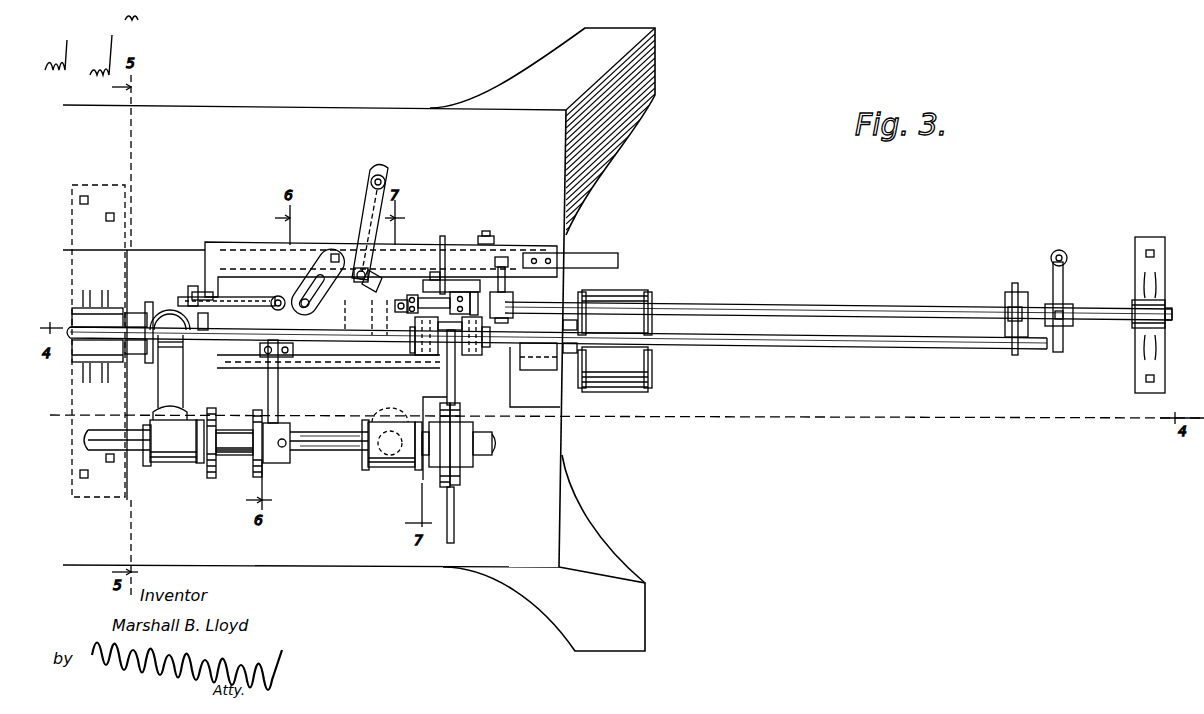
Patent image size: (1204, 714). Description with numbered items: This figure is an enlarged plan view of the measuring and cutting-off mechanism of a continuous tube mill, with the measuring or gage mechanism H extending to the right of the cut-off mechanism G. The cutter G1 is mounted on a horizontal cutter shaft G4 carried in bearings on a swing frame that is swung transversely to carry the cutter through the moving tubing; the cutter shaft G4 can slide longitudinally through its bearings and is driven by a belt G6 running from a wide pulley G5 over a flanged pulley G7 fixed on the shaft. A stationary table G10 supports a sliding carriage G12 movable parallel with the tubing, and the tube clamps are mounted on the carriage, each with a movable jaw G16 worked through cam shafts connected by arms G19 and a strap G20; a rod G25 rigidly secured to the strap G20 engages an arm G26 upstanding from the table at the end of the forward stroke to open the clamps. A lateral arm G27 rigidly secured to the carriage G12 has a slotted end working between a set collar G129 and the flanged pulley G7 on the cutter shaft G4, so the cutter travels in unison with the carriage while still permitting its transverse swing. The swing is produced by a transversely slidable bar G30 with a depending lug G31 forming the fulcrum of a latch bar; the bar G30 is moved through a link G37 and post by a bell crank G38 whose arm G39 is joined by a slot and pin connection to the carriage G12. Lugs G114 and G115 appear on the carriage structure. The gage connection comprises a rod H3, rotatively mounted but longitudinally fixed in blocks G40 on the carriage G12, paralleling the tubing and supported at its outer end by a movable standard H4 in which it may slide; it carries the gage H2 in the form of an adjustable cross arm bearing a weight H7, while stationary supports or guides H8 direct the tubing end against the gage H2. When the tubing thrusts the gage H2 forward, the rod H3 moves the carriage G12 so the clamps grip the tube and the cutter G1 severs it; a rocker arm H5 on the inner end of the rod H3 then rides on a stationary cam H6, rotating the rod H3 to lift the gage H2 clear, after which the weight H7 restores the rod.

The main shaft G is at (557, 338).
The cutter G1 is at (452, 505).
The cutter shaft G4 is at (350, 462).
The wide pulley G5 is at (173, 383).
The belt G6 is at (212, 478).
The flanged pulley G7 is at (195, 470).
The stationary table G10 is at (533, 372).
The sliding carriage G12 is at (268, 300).
The movable jaw G16 is at (415, 380).
The arms G19 is at (470, 280).
The strap G20 is at (452, 280).
The rod G25 is at (442, 236).
The arm G26 is at (485, 240).
The lateral arm G27 is at (276, 397).
The transversely slidable bar G30 is at (380, 176).
The depending lug G31 is at (363, 207).
The link G37 is at (350, 232).
The bell crank G38 is at (365, 283).
The arm G39 is at (348, 310).
The blocks G40 is at (392, 308).
The bracket G114 is at (200, 300).
The bracket lug G115 is at (196, 292).
The bearing block G129 is at (282, 465).
The measuring or gage mechanism H is at (1048, 218).
The gage H2 is at (1066, 290).
The rod H3 is at (758, 305).
The movable standard H4 is at (1110, 330).
The rocker arm H5 is at (513, 300).
The stationary cam H6 is at (592, 258).
The weight H7 is at (1066, 255).
The supports or guides H8 is at (1010, 290).